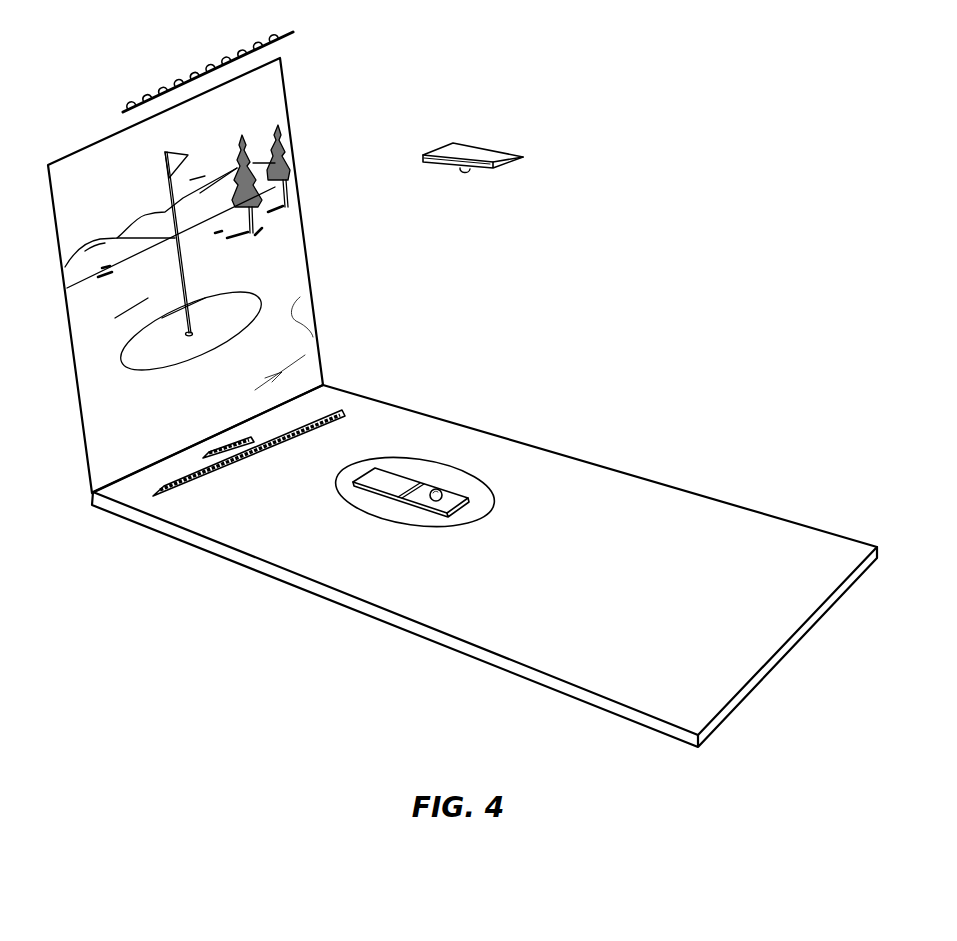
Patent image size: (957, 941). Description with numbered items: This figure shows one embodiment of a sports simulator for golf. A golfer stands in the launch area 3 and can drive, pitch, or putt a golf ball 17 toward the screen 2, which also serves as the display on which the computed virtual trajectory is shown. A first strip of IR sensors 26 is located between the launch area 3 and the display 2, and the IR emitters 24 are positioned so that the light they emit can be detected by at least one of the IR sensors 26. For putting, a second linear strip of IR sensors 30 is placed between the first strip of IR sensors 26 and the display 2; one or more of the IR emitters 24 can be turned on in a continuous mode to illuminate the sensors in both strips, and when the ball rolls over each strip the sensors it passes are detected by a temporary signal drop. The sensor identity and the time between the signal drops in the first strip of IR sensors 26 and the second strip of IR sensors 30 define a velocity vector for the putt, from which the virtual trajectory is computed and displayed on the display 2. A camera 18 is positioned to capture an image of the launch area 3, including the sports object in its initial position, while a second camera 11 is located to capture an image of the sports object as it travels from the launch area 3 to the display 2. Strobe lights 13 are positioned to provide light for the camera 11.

The screen 2 is at (80, 168).
The IR emitters 24 is at (210, 71).
The IR sensors 26 is at (187, 485).
The linear strip of IR sensors 30 is at (223, 447).
The launch area 3 is at (448, 470).
The golf ball 17 is at (436, 501).
The camera 11 is at (444, 193).
The strobe lights 13 is at (440, 170).
The camera 18 is at (450, 172).